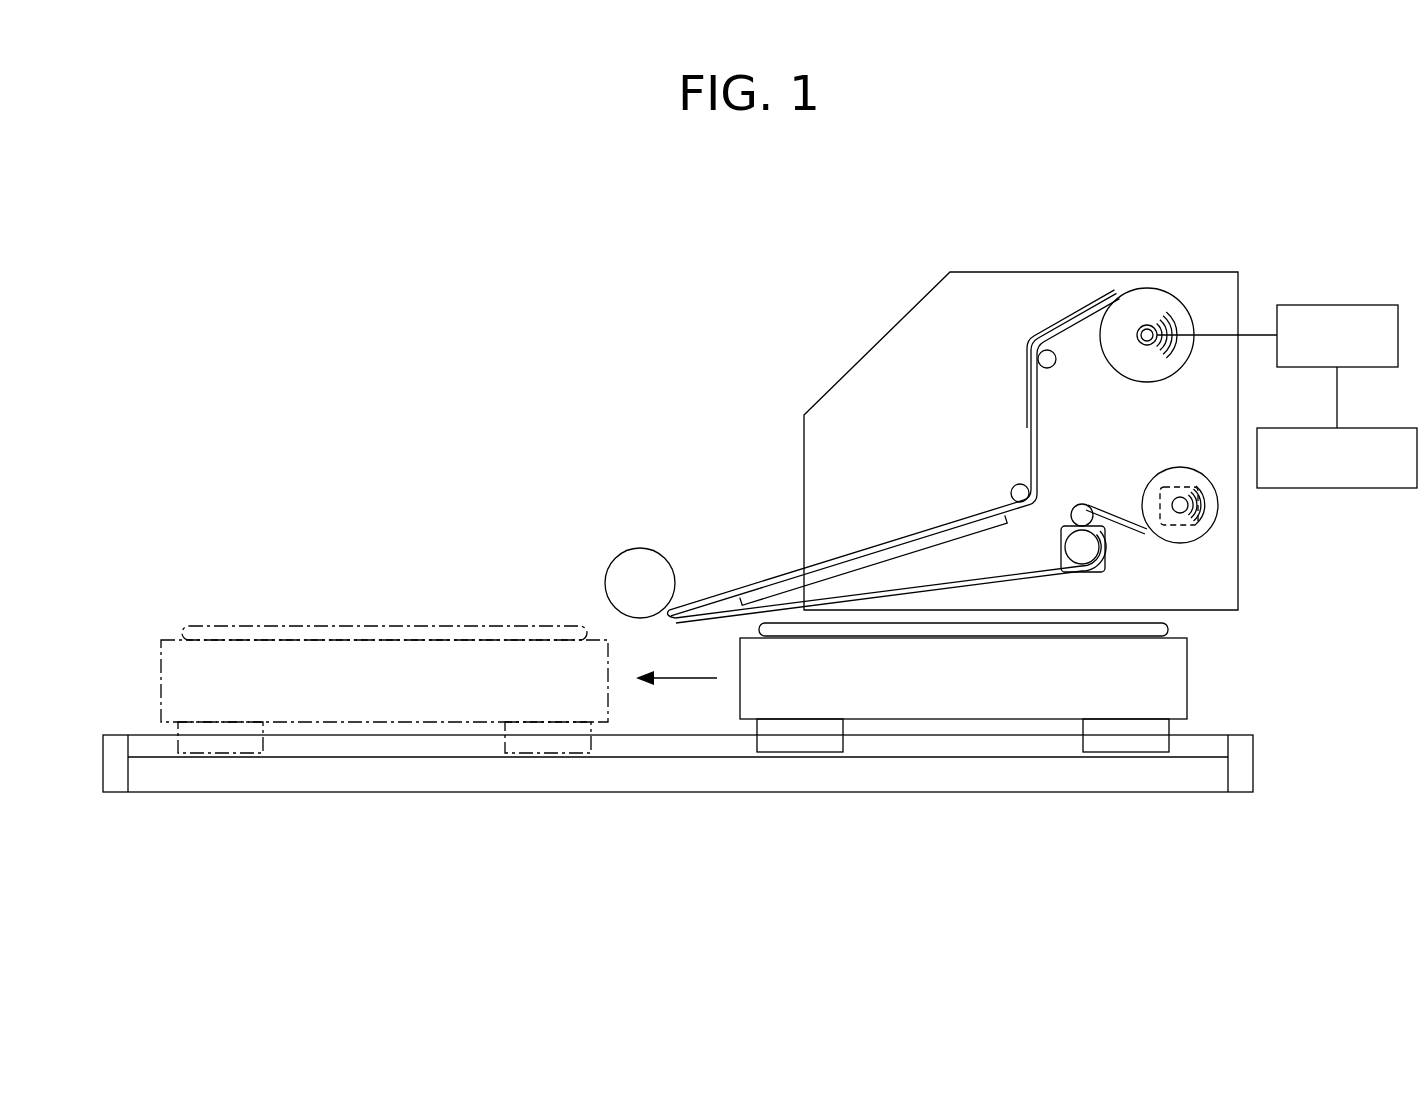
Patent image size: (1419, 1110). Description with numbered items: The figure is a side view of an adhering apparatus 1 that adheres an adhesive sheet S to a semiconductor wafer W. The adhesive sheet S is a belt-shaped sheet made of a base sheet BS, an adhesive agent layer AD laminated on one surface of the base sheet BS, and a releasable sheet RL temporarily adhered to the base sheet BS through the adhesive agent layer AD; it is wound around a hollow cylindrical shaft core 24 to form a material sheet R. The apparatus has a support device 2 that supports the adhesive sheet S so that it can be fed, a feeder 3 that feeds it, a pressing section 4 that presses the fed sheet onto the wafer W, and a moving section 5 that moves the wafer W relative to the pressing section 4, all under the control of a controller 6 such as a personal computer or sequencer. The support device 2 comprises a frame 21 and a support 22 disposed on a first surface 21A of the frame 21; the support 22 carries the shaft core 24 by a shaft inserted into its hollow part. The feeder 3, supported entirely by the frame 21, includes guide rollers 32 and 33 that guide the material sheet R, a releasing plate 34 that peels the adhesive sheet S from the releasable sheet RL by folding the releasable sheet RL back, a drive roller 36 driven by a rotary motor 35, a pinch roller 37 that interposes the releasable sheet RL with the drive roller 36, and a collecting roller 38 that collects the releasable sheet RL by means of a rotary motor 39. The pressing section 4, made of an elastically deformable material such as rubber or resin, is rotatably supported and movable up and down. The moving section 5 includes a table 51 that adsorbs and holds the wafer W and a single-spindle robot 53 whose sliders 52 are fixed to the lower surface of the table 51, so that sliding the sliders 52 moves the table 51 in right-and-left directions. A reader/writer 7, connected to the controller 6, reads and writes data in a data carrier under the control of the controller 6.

The adhering apparatus 1 is at (462, 267).
The support device 2 is at (1000, 178).
The feeder 3 is at (973, 386).
The pressing section 4 is at (605, 572).
The moving section 5 is at (1200, 706).
The controller 6 is at (1340, 490).
The reader/writer 7 is at (1336, 305).
The frame 21 is at (980, 272).
The first surface 21A is at (1222, 293).
The support 22 is at (1145, 326).
The shaft core 24 is at (1147, 345).
The guide roller 32 is at (1055, 364).
The guide roller 33 is at (1012, 490).
The releasing plate 34 is at (972, 532).
The rotary motor 35 is at (1107, 553).
The drive roller 36 is at (1082, 556).
The pinch roller 37 is at (1083, 508).
The collecting roller 38 is at (1182, 513).
The rotary motor 39 is at (1183, 487).
The table 51 is at (1190, 658).
The slider 52 is at (215, 745).
The single-spindle robot 53 is at (1255, 762).
The material sheet R is at (1157, 323).
The adhesive sheet S is at (894, 404).
The base sheet BS is at (1055, 333).
The adhesive agent layer AD is at (1078, 338).
The releasable sheet RL is at (1030, 450).
The wafer W is at (1170, 630).